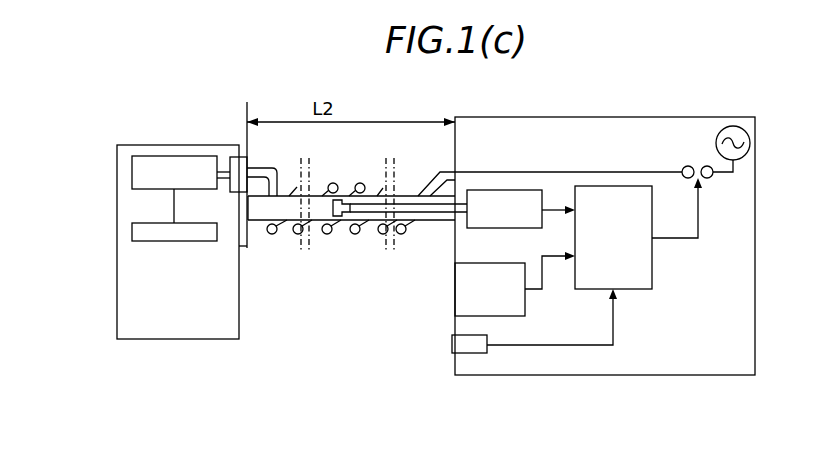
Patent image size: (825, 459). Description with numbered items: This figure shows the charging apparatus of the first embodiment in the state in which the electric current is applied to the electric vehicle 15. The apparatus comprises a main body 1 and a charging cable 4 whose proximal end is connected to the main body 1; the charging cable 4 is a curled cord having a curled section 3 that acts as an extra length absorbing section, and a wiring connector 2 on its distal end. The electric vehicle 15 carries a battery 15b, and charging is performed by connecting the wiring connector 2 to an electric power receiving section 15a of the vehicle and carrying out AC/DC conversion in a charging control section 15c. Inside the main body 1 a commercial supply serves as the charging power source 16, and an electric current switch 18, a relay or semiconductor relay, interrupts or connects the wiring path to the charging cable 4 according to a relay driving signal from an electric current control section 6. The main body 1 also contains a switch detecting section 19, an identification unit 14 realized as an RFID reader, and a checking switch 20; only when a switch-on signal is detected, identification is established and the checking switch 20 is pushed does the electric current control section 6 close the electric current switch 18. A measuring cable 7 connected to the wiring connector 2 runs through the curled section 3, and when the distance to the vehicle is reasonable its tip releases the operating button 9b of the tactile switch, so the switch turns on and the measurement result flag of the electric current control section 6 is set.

The main body 1 is at (742, 307).
The wiring connector 2 is at (246, 244).
The curled section 3 is at (348, 252).
The charging cable 4 is at (327, 234).
The electric current control section 6 is at (650, 277).
The measuring cable 7 is at (257, 203).
The operating button 9b is at (323, 208).
The identification unit 14 is at (457, 290).
The electric vehicle 15 is at (125, 304).
The electric power receiving section 15a is at (235, 179).
The battery 15b is at (135, 233).
The charging control section 15c is at (135, 167).
The charging power source 16 is at (747, 133).
The electric current switch 18 is at (712, 183).
The switch detecting section 19 is at (478, 218).
The checking switch 20 is at (468, 353).